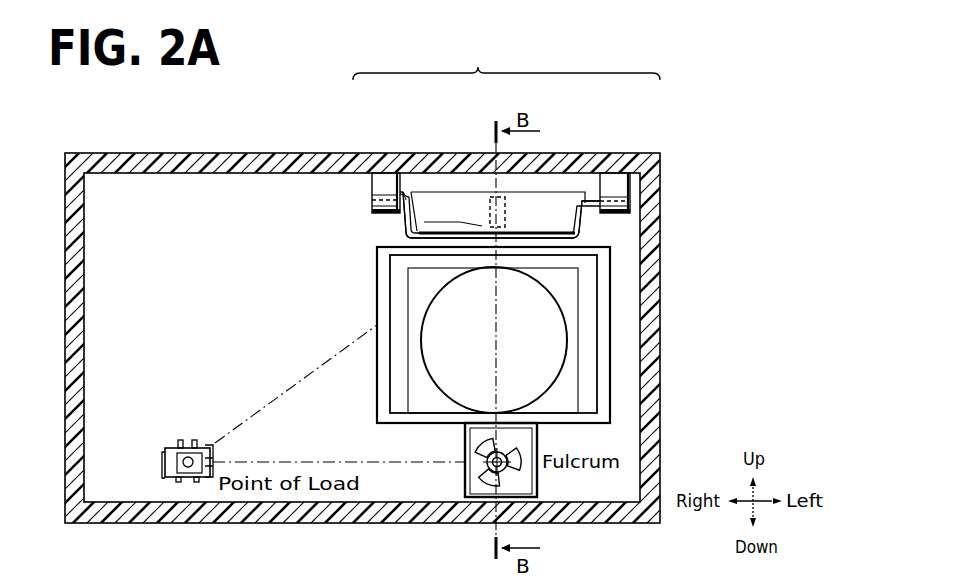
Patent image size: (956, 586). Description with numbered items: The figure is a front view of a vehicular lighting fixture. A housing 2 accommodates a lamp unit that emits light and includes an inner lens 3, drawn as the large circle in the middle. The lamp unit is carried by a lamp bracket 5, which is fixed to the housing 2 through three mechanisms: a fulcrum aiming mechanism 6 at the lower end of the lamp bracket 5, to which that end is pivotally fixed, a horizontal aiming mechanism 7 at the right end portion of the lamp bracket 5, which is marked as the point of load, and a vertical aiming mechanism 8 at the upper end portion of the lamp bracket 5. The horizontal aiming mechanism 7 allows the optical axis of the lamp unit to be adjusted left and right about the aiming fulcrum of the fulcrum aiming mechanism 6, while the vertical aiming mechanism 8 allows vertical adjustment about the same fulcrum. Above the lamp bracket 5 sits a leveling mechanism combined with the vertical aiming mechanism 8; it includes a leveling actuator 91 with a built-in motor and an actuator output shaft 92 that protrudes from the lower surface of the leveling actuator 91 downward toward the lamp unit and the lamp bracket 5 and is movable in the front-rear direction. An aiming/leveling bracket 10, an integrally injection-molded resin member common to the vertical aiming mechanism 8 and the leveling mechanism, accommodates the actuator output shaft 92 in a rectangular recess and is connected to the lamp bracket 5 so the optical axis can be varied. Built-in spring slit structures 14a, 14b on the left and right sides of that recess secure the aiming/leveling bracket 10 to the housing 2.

The housing 2 is at (111, 153).
The inner lens 3 is at (457, 310).
The lamp bracket 5 is at (377, 292).
The fulcrum aiming mechanism 6 is at (463, 437).
The horizontal aiming mechanism 7 is at (180, 442).
The vertical aiming mechanism 8 is at (390, 222).
The aiming/leveling bracket 10 is at (377, 236).
The built-in spring slit structure 14a is at (372, 199).
The built-in spring slit structure 14b is at (613, 216).
The leveling actuator 91 is at (440, 186).
The actuator output shaft 92 is at (506, 210).